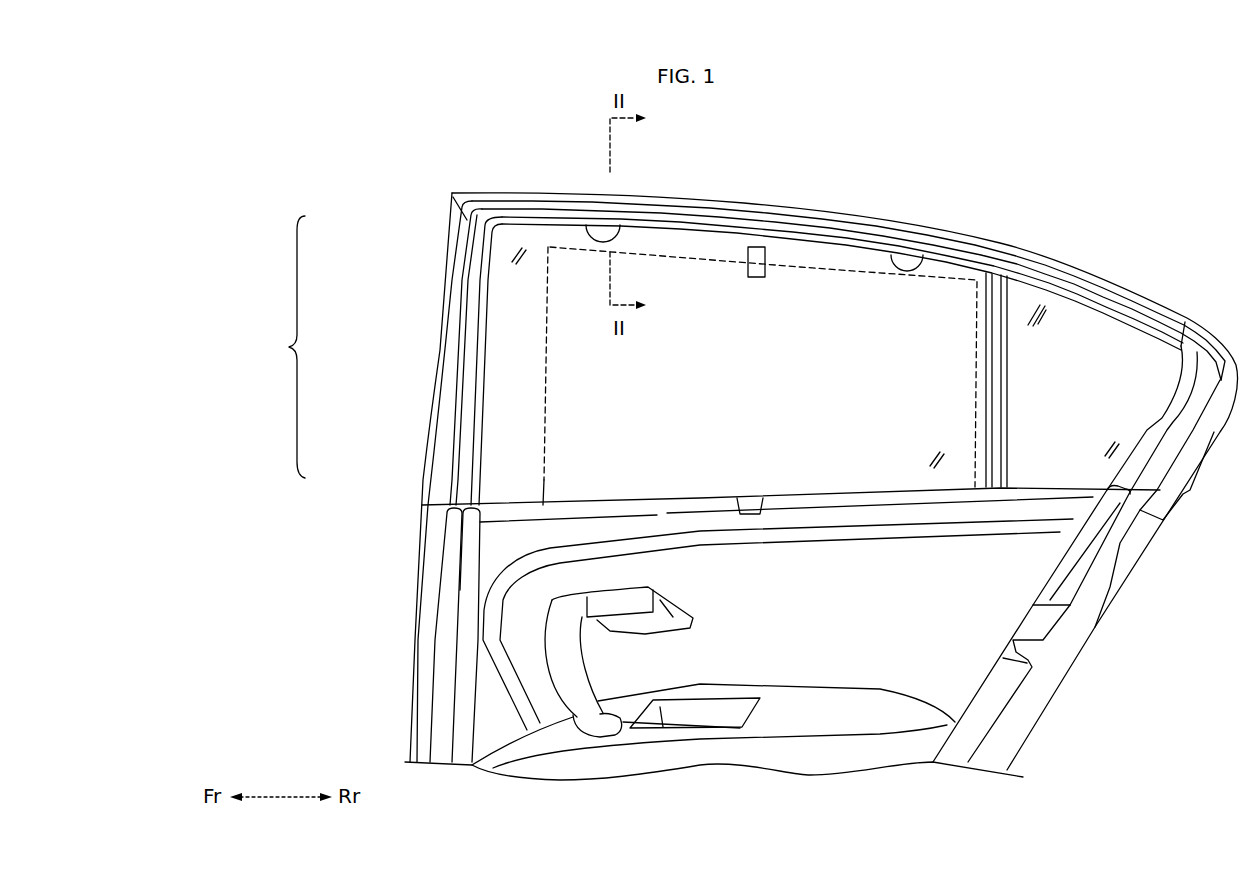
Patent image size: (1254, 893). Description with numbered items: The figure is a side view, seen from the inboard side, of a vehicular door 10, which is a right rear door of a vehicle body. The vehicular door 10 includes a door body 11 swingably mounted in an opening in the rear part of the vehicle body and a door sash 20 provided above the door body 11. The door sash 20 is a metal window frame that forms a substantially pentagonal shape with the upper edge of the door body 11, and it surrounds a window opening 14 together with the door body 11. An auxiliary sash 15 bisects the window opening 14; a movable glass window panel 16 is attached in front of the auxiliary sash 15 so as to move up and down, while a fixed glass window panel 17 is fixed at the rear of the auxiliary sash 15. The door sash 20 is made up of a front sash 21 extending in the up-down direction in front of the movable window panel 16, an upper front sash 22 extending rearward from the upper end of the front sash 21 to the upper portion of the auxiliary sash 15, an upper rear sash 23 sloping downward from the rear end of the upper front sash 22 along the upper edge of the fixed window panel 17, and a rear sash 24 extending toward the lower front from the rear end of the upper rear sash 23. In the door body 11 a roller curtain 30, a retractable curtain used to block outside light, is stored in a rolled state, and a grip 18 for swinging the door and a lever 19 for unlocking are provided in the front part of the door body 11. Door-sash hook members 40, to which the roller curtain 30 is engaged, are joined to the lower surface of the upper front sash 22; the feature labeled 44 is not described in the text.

The vehicular door 10 is at (323, 172).
The door body 11 is at (414, 650).
The window opening 14 is at (775, 411).
The auxiliary sash 15 is at (1011, 285).
The movable glass window panel 16 is at (797, 297).
The fixed glass window panel 17 is at (1100, 363).
The grip 18 is at (547, 690).
The lever 19 is at (640, 618).
The door sash 20 is at (363, 337).
The front sash 21 is at (458, 338).
The upper front sash 22 is at (500, 185).
The upper rear sash 23 is at (1090, 316).
The rear sash 24 is at (1153, 428).
The roller curtain 30 is at (933, 268).
The door-sash hook member 40 is at (583, 228).
The engaging protrusion 44 is at (607, 230).